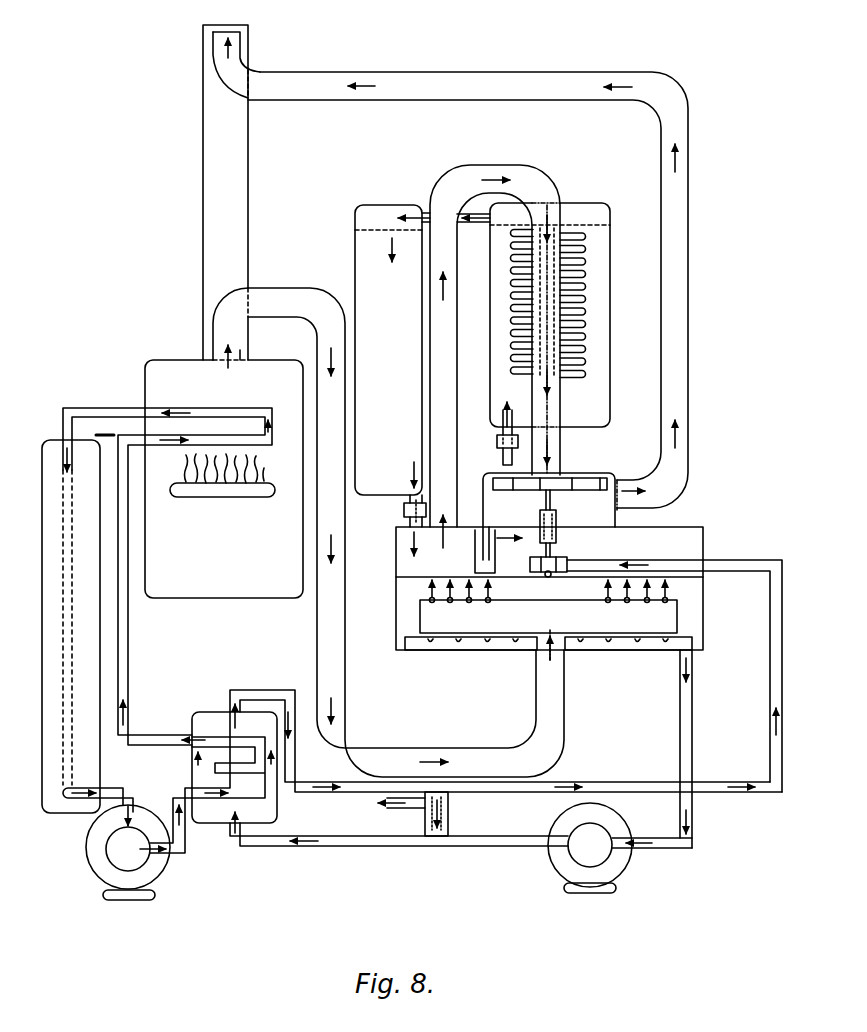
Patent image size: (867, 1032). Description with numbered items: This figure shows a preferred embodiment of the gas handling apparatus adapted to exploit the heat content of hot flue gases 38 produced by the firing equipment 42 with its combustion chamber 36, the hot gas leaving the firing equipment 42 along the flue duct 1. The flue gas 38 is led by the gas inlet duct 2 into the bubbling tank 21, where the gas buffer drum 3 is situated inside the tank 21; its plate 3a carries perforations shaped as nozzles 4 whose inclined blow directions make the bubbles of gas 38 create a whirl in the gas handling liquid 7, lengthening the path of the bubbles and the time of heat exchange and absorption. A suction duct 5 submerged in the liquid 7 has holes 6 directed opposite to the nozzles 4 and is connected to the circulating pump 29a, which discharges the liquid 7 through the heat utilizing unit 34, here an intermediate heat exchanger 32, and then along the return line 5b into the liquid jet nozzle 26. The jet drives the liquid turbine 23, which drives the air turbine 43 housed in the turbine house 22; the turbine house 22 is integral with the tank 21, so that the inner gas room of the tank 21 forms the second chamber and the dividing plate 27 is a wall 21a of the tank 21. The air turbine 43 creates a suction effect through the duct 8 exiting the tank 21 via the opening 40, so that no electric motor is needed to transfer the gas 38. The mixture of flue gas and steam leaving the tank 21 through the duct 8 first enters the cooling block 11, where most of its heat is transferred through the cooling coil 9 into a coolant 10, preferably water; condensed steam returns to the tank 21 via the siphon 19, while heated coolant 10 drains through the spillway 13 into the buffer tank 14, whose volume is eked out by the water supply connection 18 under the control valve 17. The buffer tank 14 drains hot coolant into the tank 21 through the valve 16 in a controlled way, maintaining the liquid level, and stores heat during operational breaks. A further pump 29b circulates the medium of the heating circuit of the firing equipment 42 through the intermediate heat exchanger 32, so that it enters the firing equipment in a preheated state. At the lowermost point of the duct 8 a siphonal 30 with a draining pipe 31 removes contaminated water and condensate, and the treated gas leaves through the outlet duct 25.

The hot gas duct 1 is at (203, 185).
The gas inlet duct 2 is at (301, 288).
The gas buffer drum 3 is at (421, 619).
The plate 3a is at (522, 600).
The nozzles 4 is at (486, 604).
The suction duct 5 is at (419, 650).
The water supply line 5b is at (660, 549).
The holes 6 is at (515, 648).
The gas handling liquid 7 is at (528, 584).
The duct 8 is at (499, 166).
The cooling coil 9 is at (572, 265).
The coolant 10 is at (599, 291).
The cooling block 11 is at (600, 207).
The spillway 13 is at (474, 225).
The buffer tank 14 is at (355, 222).
The valve 16 is at (404, 510).
The control valve 17 is at (497, 441).
The water supply connection 18 is at (503, 461).
The siphon 19 is at (475, 553).
The bubbling tank 21 is at (396, 559).
The wall 21a is at (683, 527).
The turbine house 22 is at (583, 476).
The liquid turbine 23 is at (553, 556).
The outlet duct 25 is at (293, 72).
The liquid jet nozzle 26 is at (602, 563).
The plate 27 is at (635, 521).
The circulating pump 29a is at (615, 864).
The pump 29b is at (158, 871).
The siphonal 30 is at (448, 806).
The draining pipe 31 is at (389, 808).
The intermediate heat exchanger 32 is at (200, 712).
The heat utilizing unit 34 is at (52, 444).
The combustion chamber 36 is at (262, 485).
The flue gas 38 is at (236, 199).
The opening 40 is at (441, 537).
The firing equipment 42 is at (165, 361).
The air turbine 43 is at (493, 485).